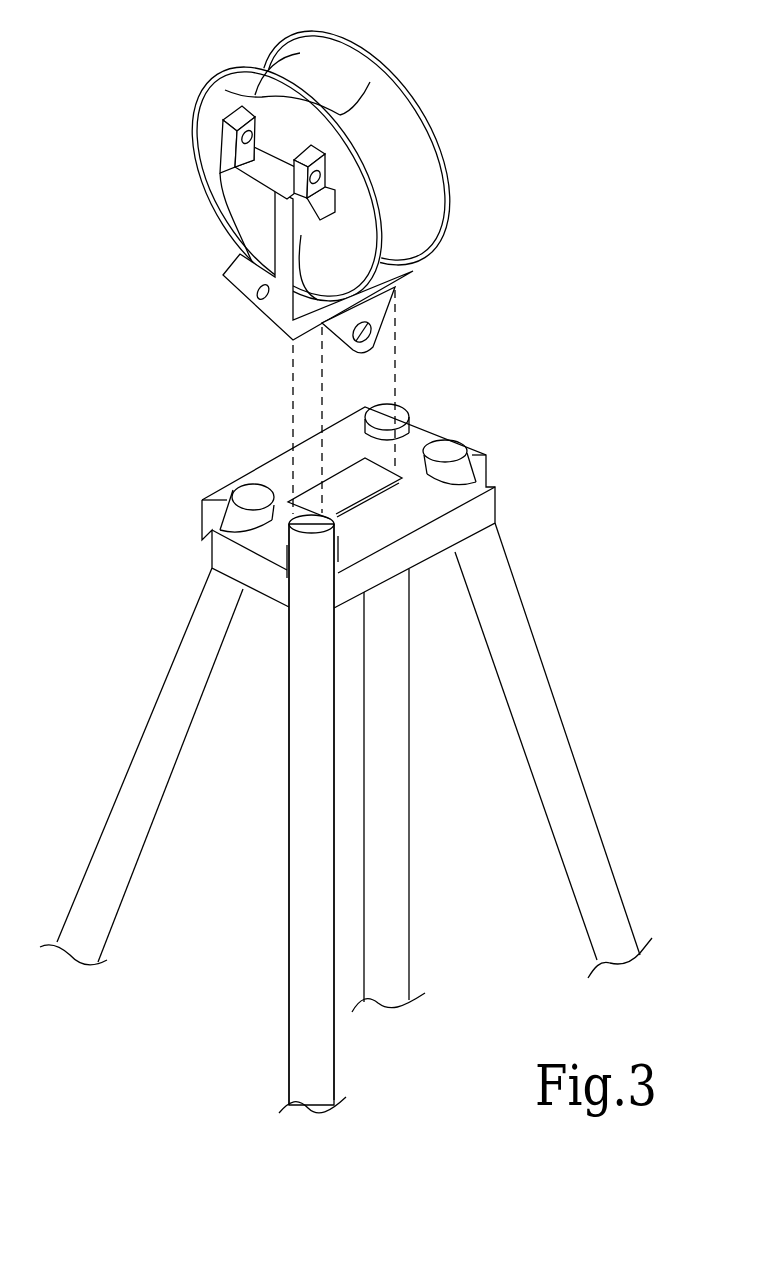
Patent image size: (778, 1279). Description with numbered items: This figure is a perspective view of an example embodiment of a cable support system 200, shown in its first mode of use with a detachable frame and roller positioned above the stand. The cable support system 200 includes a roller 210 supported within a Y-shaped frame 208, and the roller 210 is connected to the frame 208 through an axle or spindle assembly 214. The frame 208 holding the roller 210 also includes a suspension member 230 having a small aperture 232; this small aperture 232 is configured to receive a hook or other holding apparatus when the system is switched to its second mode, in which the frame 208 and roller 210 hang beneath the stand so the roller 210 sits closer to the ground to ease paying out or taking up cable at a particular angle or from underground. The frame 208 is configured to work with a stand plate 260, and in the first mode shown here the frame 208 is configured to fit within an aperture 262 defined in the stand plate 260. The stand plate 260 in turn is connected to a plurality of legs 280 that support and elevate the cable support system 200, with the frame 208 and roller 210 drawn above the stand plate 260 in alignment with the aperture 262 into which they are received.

The cable support system 200 is at (372, 556).
The roller 210 is at (422, 207).
The axle or spindle assembly 214 is at (248, 200).
The Y-shaped frame 208 is at (322, 285).
The suspension member 230 is at (423, 342).
The small aperture 232 is at (375, 345).
The stand plate 260 is at (396, 506).
The aperture 262 is at (347, 483).
The legs 280 is at (143, 763).